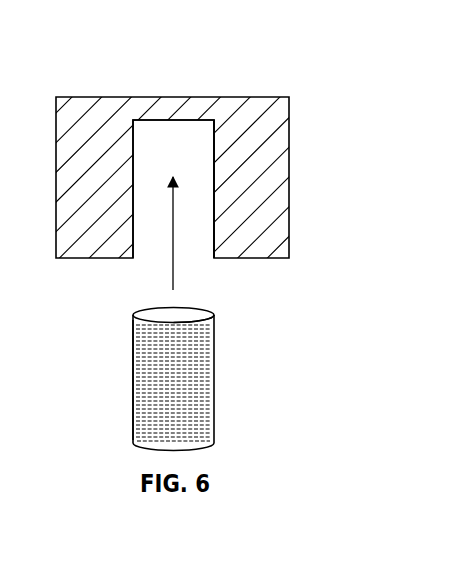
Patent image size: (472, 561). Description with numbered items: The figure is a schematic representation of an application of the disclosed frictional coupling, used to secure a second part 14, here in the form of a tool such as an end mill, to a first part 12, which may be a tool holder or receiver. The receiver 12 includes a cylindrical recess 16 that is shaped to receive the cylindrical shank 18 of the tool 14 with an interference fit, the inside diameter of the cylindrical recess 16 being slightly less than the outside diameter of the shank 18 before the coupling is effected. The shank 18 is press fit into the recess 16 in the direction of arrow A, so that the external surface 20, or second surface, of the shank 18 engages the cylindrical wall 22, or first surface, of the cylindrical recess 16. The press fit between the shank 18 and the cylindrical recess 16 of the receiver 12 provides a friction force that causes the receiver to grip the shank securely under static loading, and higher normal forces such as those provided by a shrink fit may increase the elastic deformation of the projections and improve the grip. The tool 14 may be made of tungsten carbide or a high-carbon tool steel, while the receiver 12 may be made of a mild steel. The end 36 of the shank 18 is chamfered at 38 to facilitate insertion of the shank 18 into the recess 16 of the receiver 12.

The first part 12 is at (300, 125).
The cylindrical recess 16 is at (196, 128).
The cylindrical wall 22 is at (213, 193).
The second part 14 is at (182, 368).
The cylindrical shank 18 is at (215, 394).
The external surface 20 is at (132, 370).
The end 36 is at (192, 314).
The chamfer 38 is at (212, 317).
The arrow A is at (173, 262).